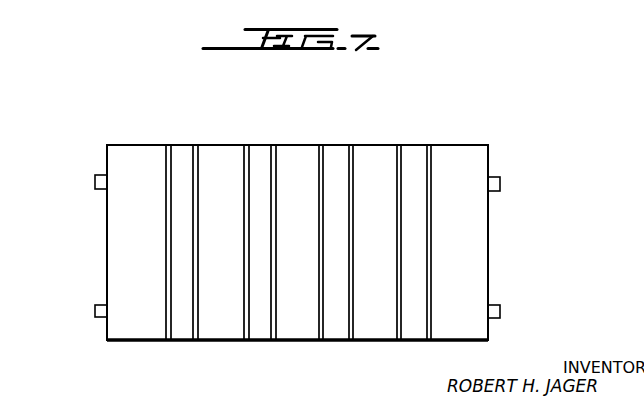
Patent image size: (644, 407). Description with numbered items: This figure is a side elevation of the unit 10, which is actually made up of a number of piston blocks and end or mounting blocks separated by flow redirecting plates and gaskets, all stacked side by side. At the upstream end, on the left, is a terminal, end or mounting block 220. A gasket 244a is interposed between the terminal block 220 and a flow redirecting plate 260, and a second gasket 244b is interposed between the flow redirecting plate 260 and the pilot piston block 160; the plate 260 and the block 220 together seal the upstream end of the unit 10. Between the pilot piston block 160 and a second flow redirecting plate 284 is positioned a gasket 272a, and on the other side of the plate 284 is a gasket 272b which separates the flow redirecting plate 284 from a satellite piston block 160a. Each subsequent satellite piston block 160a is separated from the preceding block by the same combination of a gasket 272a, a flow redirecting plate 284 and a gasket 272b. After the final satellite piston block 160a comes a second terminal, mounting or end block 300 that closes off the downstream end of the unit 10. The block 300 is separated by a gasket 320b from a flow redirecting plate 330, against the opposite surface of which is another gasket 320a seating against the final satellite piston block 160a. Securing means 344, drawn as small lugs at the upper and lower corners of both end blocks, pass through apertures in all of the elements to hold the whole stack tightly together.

The unit 10 is at (533, 126).
The terminal block 220 is at (130, 145).
The gasket 244a is at (167, 145).
The second gasket 244b is at (195, 145).
The flow redirecting plate 260 is at (177, 343).
The pilot piston block 160 is at (296, 145).
The gasket 272a is at (321, 145).
The second flow redirecting plate 284 is at (345, 145).
The gasket 272b is at (353, 145).
The satellite piston block 160a is at (379, 145).
The gasket 320a is at (400, 145).
The flow redirecting plate 330 is at (423, 145).
The gasket 320b is at (432, 144).
The second terminal block 300 is at (483, 343).
The securing means 344 is at (95, 182).